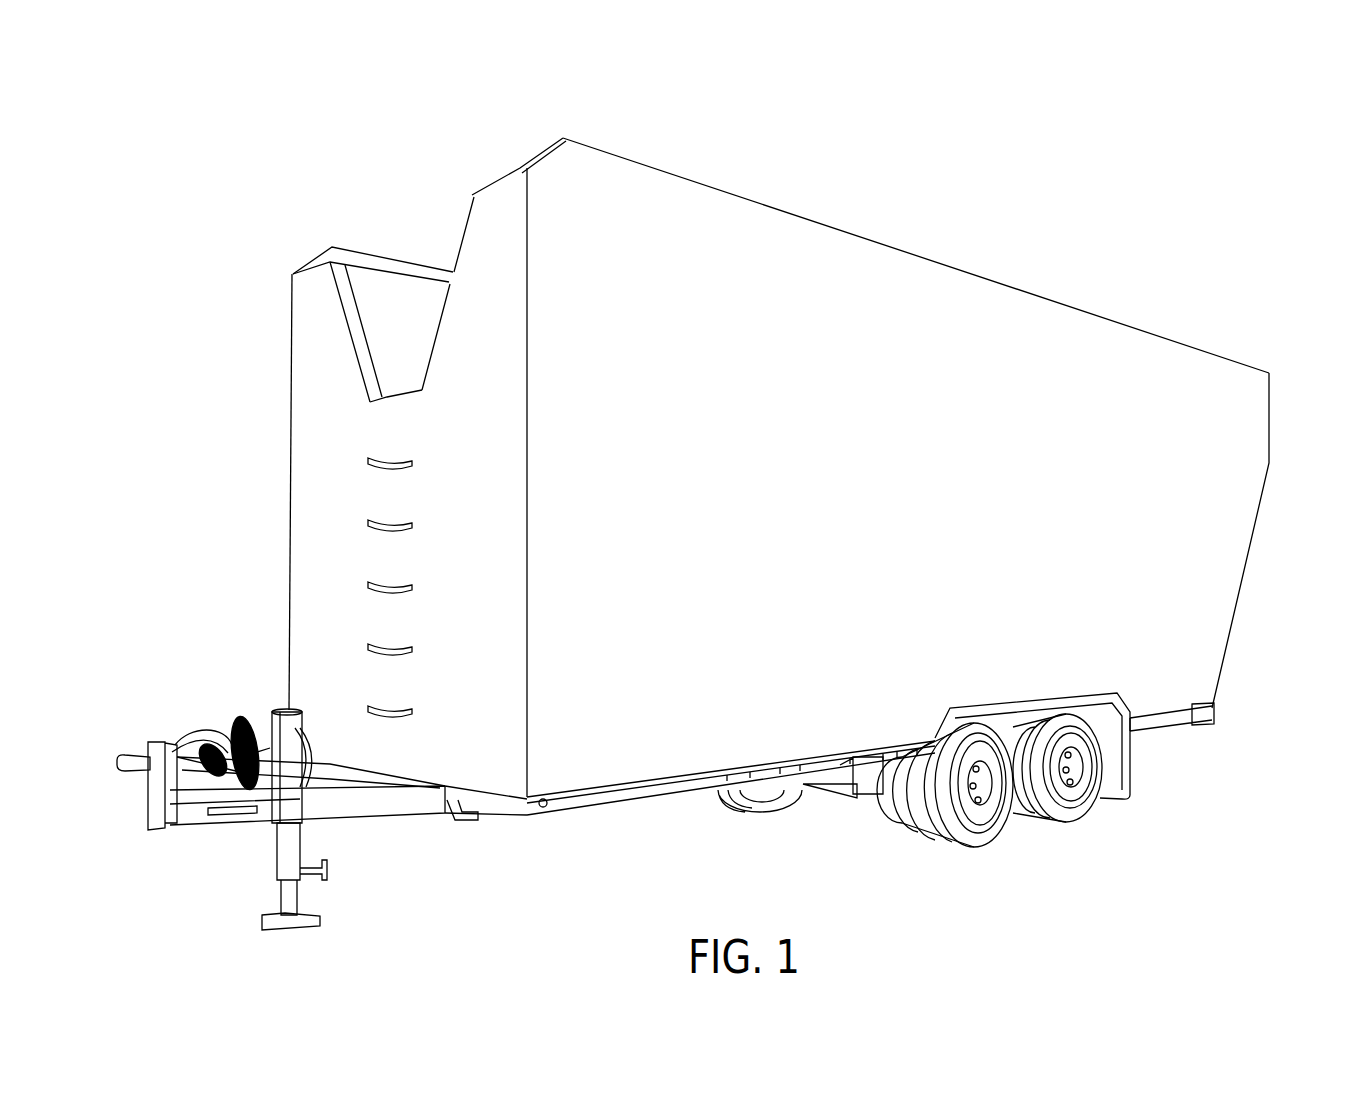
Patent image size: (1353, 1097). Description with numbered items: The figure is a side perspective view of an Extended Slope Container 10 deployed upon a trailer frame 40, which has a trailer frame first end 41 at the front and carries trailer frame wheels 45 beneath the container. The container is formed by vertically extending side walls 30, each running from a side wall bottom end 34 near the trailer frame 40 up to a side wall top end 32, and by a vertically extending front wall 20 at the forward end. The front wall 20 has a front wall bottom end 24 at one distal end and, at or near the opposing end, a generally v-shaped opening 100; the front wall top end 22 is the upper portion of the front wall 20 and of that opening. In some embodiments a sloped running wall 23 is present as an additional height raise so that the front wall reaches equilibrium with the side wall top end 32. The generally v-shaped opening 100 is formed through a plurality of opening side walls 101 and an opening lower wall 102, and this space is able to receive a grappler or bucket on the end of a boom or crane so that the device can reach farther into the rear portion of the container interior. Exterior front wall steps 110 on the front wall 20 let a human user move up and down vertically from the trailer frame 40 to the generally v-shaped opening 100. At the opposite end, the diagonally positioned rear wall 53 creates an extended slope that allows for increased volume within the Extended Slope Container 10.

The Extended Slope Container 10 is at (1206, 187).
The front wall 20 is at (486, 590).
The front wall top end 22 is at (491, 178).
The sloped running wall 23 is at (539, 130).
The front wall bottom end 24 is at (489, 808).
The side walls 30 is at (1121, 392).
The side wall top end 32 is at (1019, 285).
The side wall bottom end 34 is at (878, 770).
The trailer frame 40 is at (367, 819).
The trailer frame first end 41 is at (134, 788).
The trailer frame wheels 45 is at (983, 852).
The rear wall 53 is at (1256, 558).
The generally v-shaped opening 100 is at (434, 240).
The opening side walls 101 is at (344, 345).
The opening lower wall 102 is at (393, 406).
The exterior front wall steps 110 is at (350, 586).